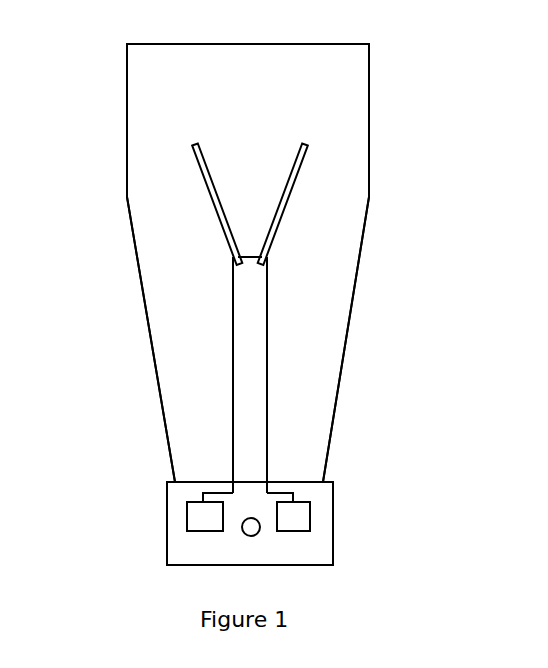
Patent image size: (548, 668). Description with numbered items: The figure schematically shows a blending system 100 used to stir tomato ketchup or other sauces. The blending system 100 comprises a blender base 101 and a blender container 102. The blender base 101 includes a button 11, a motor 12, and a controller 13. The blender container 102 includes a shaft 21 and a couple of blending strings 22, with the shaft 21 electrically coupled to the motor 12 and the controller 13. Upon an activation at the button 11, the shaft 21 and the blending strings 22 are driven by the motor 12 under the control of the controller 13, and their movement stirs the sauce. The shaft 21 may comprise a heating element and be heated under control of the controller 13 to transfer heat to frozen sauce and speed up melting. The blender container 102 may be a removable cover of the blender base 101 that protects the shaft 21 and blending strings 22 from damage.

The blending system 100 is at (97, 48).
The blender container 102 is at (343, 125).
The blender base 101 is at (325, 500).
The blending strings 22 is at (298, 152).
The shaft 21 is at (252, 388).
The motor 12 is at (198, 513).
The controller 13 is at (298, 522).
The button 11 is at (250, 530).